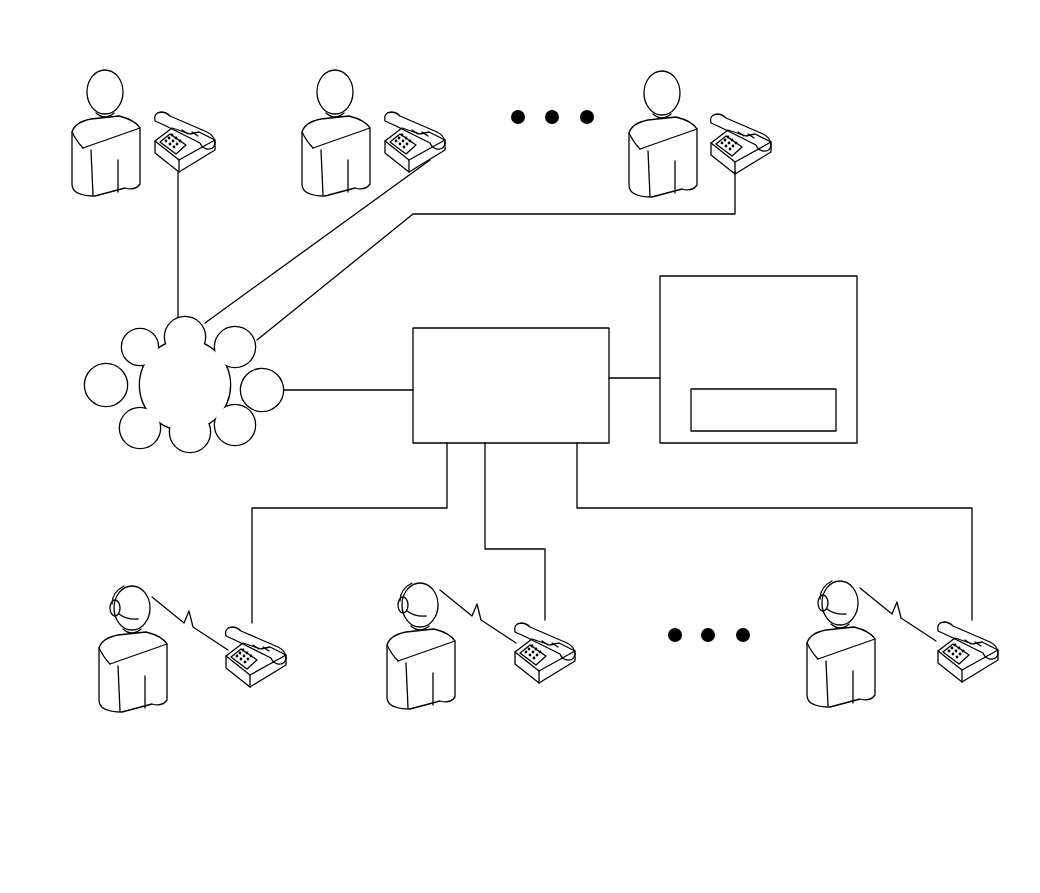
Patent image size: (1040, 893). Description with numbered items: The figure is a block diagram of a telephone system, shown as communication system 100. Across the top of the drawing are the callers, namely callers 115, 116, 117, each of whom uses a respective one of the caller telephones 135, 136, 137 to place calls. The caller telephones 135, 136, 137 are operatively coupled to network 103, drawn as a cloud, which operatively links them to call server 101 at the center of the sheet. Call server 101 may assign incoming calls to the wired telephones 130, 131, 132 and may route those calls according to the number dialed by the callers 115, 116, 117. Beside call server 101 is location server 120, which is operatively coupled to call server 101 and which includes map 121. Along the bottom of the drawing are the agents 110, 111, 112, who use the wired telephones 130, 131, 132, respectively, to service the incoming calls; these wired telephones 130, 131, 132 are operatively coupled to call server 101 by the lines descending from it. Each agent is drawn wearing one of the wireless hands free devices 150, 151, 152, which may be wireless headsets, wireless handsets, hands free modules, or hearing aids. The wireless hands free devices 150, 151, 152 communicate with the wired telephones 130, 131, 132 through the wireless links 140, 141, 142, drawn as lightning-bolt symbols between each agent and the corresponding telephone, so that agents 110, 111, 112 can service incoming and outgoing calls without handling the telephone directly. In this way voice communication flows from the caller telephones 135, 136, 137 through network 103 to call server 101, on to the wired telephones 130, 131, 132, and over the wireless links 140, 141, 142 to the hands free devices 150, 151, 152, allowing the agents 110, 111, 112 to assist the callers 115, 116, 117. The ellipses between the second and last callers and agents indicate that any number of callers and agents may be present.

The communication system 100 is at (903, 50).
The call server 101 is at (528, 410).
The network 103 is at (201, 411).
The agent 110 is at (108, 637).
The agent 111 is at (396, 632).
The agent 112 is at (816, 632).
The caller 115 is at (125, 115).
The caller 116 is at (355, 115).
The caller 117 is at (683, 115).
The location server 120 is at (776, 358).
The map 121 is at (807, 420).
The wired telephone 130 is at (270, 641).
The wired telephone 131 is at (561, 636).
The wired telephone 132 is at (980, 639).
The caller telephone 135 is at (198, 125).
The caller telephone 136 is at (427, 124).
The caller telephone 137 is at (755, 126).
The wireless link 140 is at (188, 616).
The wireless link 141 is at (478, 610).
The wireless link 142 is at (898, 612).
The wireless hands free device 150 is at (114, 595).
The wireless hands free device 151 is at (402, 592).
The wireless hands free device 152 is at (822, 590).